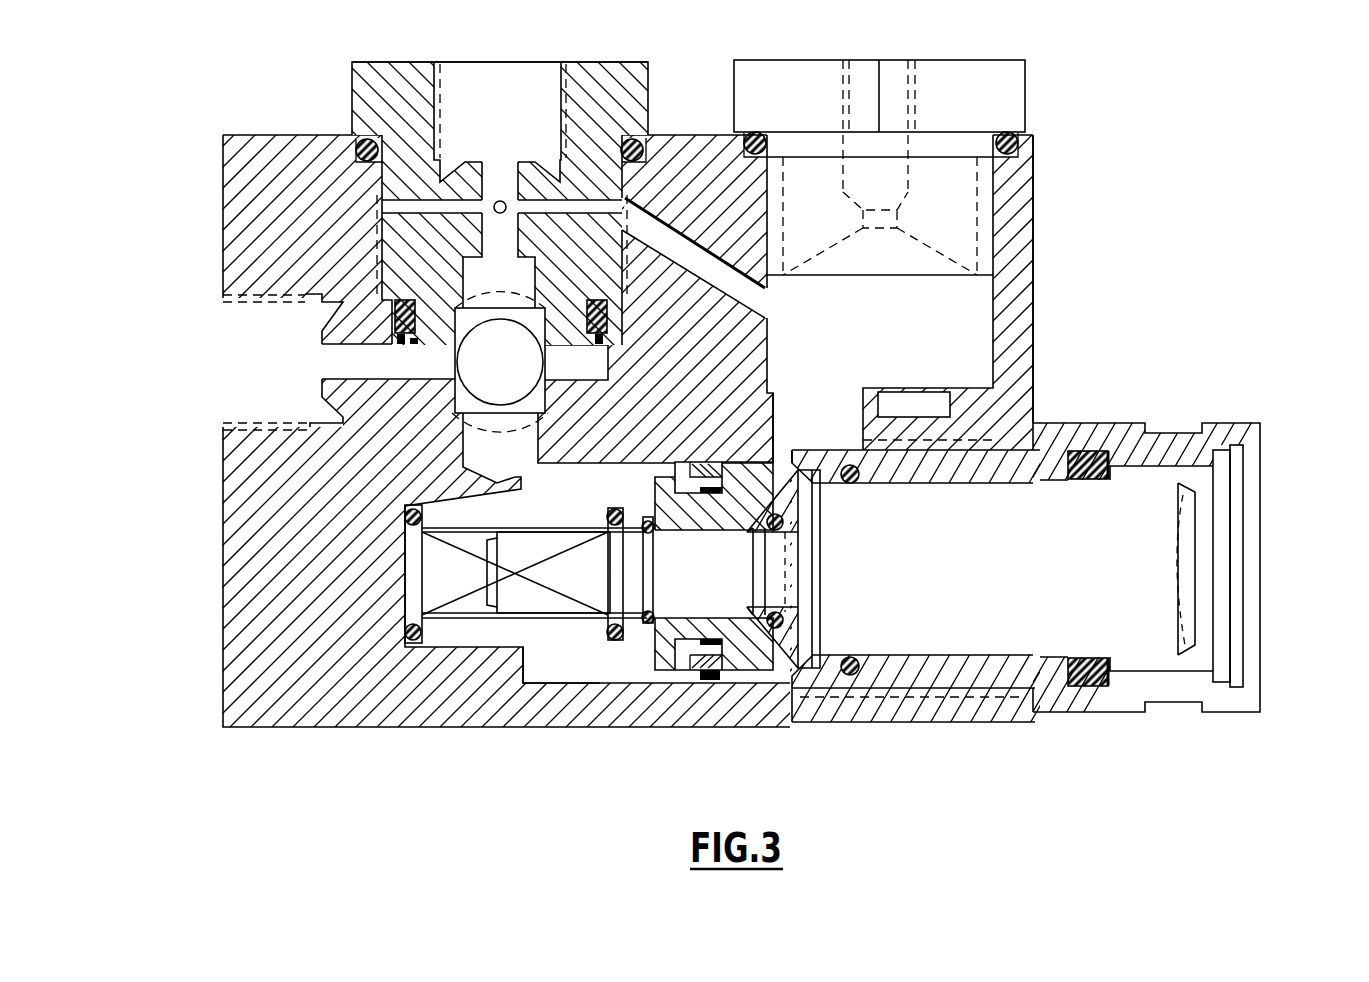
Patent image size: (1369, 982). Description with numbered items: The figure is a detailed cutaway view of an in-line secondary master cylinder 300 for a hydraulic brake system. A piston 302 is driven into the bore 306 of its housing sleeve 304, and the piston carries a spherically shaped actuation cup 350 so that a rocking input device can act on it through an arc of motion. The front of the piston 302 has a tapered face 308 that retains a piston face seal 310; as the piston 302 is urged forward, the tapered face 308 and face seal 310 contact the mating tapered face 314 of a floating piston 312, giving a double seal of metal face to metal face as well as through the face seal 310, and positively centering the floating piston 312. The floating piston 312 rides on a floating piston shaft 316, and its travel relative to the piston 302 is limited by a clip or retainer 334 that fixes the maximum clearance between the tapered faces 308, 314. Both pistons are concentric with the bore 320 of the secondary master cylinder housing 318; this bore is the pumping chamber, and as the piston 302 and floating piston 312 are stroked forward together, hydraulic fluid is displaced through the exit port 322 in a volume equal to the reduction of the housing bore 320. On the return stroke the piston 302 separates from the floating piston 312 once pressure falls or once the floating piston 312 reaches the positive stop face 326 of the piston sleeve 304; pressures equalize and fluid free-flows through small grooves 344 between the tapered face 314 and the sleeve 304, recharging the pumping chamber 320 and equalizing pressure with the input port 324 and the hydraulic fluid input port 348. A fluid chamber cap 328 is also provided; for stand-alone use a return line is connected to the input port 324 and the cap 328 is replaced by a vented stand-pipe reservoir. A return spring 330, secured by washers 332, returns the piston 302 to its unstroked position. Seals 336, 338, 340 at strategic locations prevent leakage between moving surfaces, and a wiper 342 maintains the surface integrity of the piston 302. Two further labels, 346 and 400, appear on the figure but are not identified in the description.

The secondary master cylinder 300 is at (1178, 293).
The piston 302 is at (1153, 552).
The housing sleeve 304 is at (1247, 712).
The bore 306 is at (1203, 658).
The tapered face 308 is at (780, 643).
The piston face seal 310 is at (790, 567).
The floating piston 312 is at (657, 650).
The tapered face 314 is at (805, 487).
The floating piston shaft 316 is at (636, 512).
The secondary master cylinder housing 318 is at (222, 690).
The bore 320 is at (537, 657).
The exit port 322 is at (222, 368).
The input port 324 is at (500, 70).
The positive stop face 326 is at (800, 460).
The fluid chamber cap 328 is at (1030, 90).
The return spring 330 is at (457, 622).
The washers 332 is at (412, 510).
The retainer 334 is at (643, 550).
The seal 336 is at (692, 681).
The seal 338 is at (840, 462).
The seal 340 is at (752, 137).
The wiper 342 is at (1085, 432).
The small grooves 344 is at (797, 523).
The cavity 346 is at (987, 320).
The hydraulic fluid input port 348 is at (755, 295).
The spherically shaped actuation cup 350 is at (1188, 597).
The pilot valve 400 is at (382, 57).